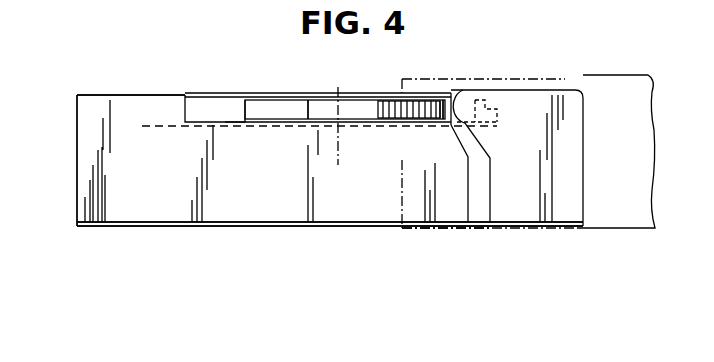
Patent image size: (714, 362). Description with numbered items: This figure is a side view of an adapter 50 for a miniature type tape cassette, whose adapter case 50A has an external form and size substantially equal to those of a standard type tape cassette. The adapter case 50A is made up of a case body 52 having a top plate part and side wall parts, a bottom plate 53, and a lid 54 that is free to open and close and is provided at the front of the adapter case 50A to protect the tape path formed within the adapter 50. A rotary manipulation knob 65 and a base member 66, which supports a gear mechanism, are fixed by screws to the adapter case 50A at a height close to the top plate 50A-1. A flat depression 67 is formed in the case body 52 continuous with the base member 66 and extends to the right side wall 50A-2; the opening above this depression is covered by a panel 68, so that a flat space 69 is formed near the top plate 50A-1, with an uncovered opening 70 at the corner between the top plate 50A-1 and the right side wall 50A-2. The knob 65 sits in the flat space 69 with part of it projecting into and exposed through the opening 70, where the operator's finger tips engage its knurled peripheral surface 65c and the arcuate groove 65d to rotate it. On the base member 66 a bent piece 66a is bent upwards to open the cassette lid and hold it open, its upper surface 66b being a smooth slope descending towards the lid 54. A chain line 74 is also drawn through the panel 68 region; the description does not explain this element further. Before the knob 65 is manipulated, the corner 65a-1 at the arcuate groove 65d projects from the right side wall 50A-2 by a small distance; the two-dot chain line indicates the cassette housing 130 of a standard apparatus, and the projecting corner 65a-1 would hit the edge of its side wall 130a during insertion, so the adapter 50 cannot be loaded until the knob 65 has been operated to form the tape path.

The adapter 50 is at (492, 66).
The adapter case 50A is at (118, 92).
The top plate 50A-1 is at (163, 93).
The right side wall 50A-2 is at (350, 208).
The case body 52 is at (76, 143).
The bottom plate 53 is at (275, 226).
The lid 54 is at (583, 117).
The rotary manipulation knob 65 is at (285, 112).
The corner 65a-1 is at (378, 105).
The peripheral surface 65c is at (421, 107).
The arcuate groove 65d is at (320, 113).
The base member 66 is at (168, 130).
The bent piece 66a is at (497, 122).
The upper surface 66b is at (480, 100).
The flat depression 67 is at (236, 121).
The panel 68 is at (345, 93).
The flat space 69 is at (232, 87).
The opening 70 is at (203, 107).
The center line 74 is at (340, 166).
The cassette housing 130 is at (565, 79).
The side wall 130a is at (403, 200).